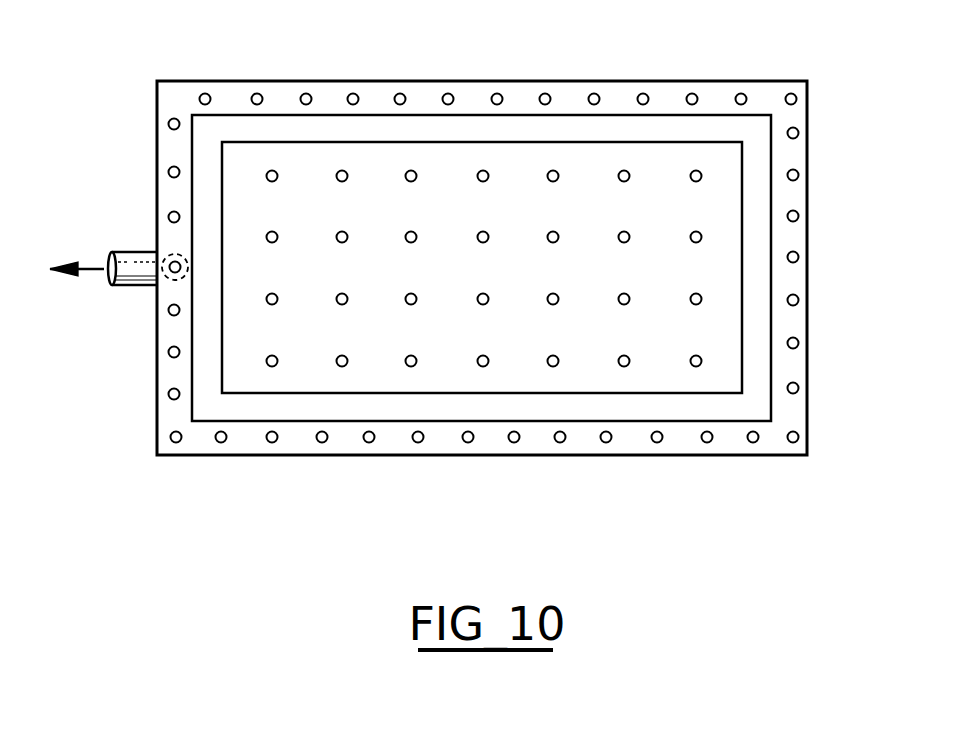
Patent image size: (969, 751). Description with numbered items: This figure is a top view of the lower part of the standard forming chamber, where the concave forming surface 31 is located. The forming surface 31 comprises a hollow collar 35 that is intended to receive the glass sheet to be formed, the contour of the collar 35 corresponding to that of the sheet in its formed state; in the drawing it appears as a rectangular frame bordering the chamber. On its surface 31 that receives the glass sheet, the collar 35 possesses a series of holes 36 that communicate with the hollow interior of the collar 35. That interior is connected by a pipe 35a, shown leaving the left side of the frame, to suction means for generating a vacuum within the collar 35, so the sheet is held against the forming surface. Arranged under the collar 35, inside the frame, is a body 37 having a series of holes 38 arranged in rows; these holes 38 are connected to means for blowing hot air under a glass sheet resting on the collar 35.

The concave forming surface 31 is at (637, 437).
The hollow collar 35 is at (692, 457).
The pipe 35a is at (128, 287).
The holes 36 is at (798, 254).
The body 37 is at (718, 323).
The holes 38 is at (411, 170).